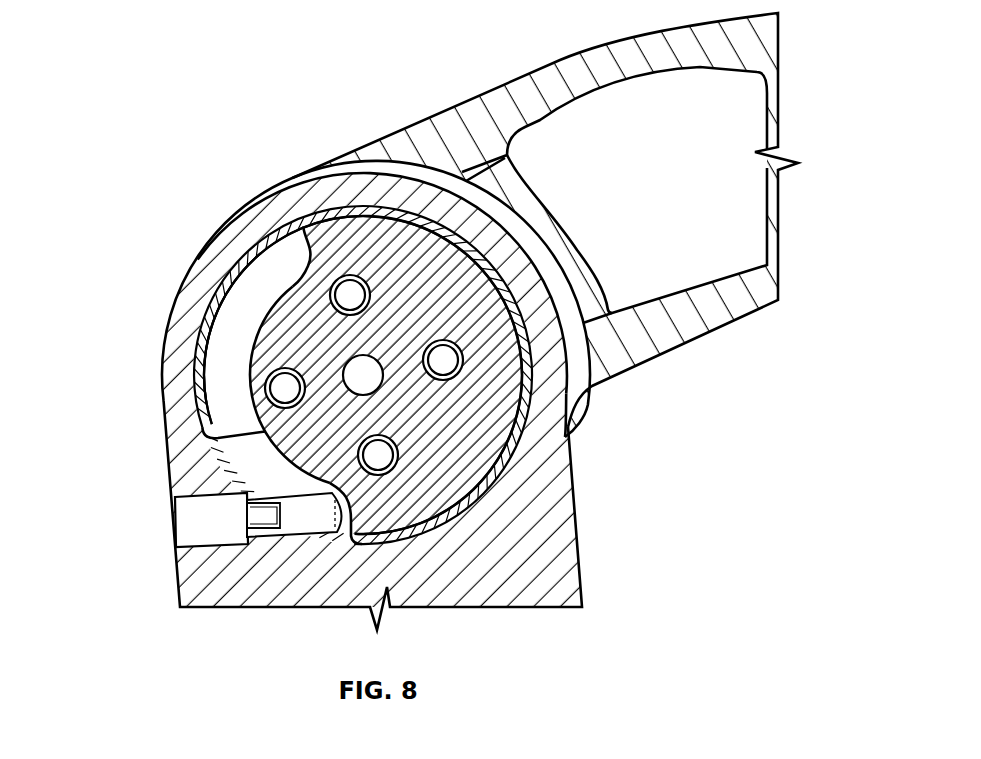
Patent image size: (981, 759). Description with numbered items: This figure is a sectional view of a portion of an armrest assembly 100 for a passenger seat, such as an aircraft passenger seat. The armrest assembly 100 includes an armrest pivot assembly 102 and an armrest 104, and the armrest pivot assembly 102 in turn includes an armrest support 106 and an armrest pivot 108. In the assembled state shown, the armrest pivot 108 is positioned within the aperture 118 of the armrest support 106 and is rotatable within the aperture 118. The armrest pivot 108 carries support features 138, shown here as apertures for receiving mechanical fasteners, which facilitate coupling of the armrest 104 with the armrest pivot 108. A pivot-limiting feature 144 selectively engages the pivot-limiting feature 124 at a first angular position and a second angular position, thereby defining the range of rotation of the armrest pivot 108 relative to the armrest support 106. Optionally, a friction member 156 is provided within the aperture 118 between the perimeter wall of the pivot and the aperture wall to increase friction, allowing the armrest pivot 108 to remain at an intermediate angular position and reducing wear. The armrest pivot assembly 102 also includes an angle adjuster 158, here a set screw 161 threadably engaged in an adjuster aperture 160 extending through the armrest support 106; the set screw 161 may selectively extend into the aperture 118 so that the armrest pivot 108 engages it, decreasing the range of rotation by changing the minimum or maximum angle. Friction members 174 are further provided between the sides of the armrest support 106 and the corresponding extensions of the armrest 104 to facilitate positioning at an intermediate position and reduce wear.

The armrest assembly 100 is at (104, 122).
The armrest pivot assembly 102 is at (120, 262).
The armrest 104 is at (535, 100).
The armrest support 106 is at (567, 528).
The armrest pivot 108 is at (377, 253).
The aperture 118 is at (241, 326).
The pivot-limiting feature 124 is at (240, 448).
The support features 138 is at (348, 283).
The pivot-limiting feature 144 is at (250, 347).
The friction member 156 is at (520, 415).
The angle adjuster 158 is at (277, 513).
The adjuster aperture 160 is at (193, 543).
The set screw 161 is at (335, 507).
The friction members 174 is at (230, 343).